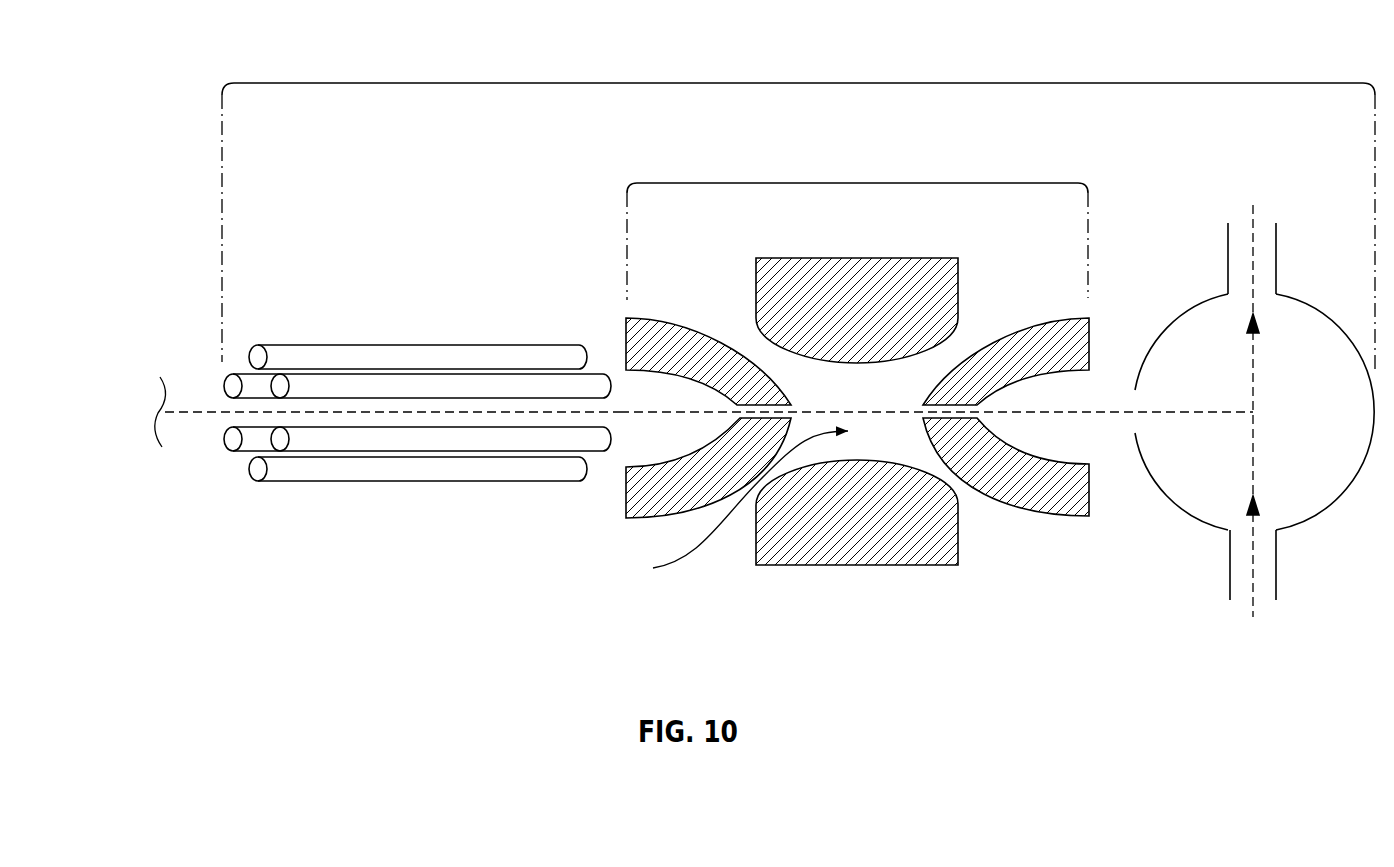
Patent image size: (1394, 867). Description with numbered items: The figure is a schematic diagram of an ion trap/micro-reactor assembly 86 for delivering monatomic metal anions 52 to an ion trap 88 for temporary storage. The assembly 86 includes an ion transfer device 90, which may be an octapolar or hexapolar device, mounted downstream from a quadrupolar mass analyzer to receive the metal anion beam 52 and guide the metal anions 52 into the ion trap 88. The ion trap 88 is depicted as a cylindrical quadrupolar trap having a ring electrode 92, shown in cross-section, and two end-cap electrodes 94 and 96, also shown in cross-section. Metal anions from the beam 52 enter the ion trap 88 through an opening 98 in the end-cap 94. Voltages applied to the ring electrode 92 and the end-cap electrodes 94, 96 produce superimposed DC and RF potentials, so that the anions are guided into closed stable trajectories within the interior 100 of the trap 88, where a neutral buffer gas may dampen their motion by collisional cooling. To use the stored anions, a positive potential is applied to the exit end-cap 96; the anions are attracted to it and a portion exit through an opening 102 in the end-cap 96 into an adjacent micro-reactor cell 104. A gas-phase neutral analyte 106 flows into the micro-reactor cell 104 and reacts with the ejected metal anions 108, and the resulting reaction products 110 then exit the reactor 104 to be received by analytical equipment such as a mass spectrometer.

The monatomic metal anions 52 is at (200, 415).
The ion trap/micro-reactor assembly 86 is at (770, 83).
The ion trap 88 is at (828, 183).
The ion transfer device 90 is at (427, 300).
The ring electrode 92 is at (907, 258).
The end-cap electrode 94 is at (667, 318).
The end-cap electrode 96 is at (1048, 318).
The opening 98 is at (792, 408).
The interior 100 is at (727, 507).
The opening 102 is at (910, 415).
The micro-reactor cell 104 is at (1305, 340).
The gas-phase neutral analyte 106 is at (1263, 612).
The ejected metal anions 108 is at (1167, 412).
The reaction products 110 is at (1263, 205).